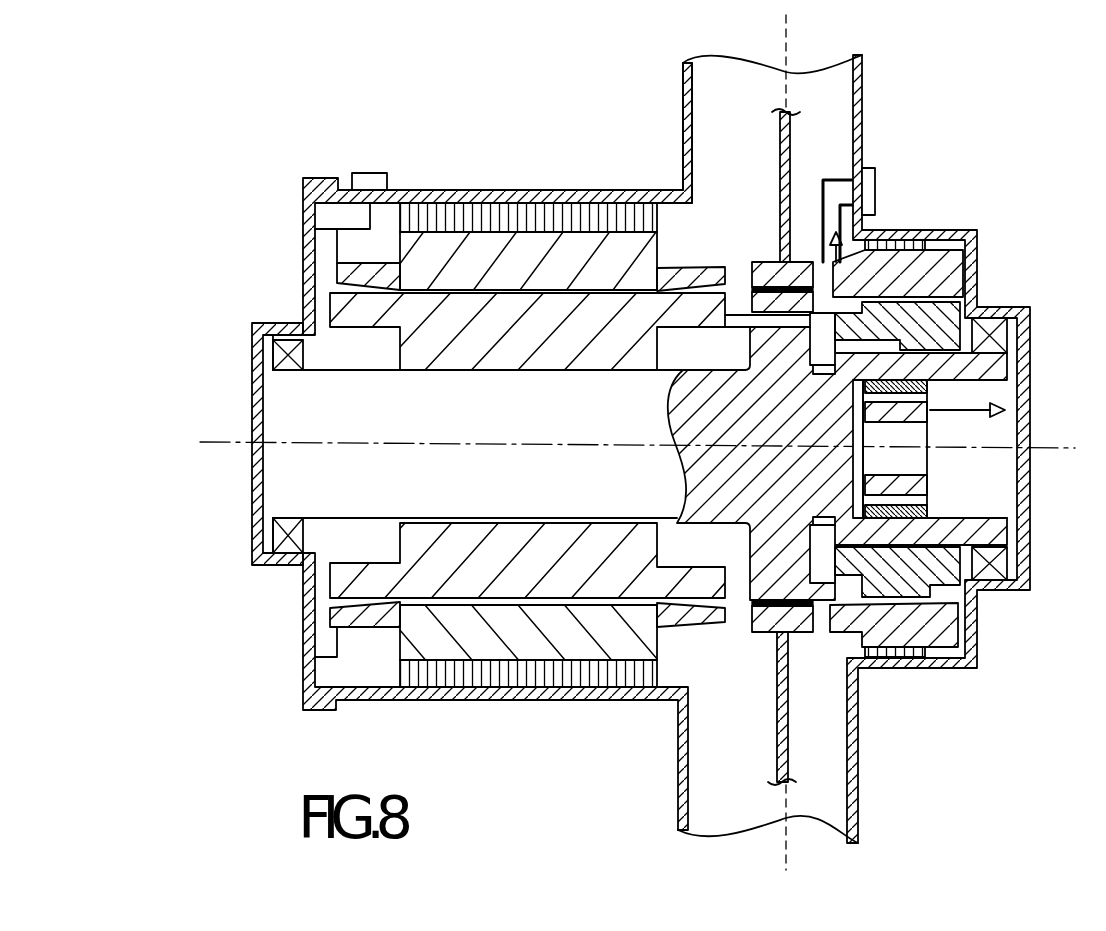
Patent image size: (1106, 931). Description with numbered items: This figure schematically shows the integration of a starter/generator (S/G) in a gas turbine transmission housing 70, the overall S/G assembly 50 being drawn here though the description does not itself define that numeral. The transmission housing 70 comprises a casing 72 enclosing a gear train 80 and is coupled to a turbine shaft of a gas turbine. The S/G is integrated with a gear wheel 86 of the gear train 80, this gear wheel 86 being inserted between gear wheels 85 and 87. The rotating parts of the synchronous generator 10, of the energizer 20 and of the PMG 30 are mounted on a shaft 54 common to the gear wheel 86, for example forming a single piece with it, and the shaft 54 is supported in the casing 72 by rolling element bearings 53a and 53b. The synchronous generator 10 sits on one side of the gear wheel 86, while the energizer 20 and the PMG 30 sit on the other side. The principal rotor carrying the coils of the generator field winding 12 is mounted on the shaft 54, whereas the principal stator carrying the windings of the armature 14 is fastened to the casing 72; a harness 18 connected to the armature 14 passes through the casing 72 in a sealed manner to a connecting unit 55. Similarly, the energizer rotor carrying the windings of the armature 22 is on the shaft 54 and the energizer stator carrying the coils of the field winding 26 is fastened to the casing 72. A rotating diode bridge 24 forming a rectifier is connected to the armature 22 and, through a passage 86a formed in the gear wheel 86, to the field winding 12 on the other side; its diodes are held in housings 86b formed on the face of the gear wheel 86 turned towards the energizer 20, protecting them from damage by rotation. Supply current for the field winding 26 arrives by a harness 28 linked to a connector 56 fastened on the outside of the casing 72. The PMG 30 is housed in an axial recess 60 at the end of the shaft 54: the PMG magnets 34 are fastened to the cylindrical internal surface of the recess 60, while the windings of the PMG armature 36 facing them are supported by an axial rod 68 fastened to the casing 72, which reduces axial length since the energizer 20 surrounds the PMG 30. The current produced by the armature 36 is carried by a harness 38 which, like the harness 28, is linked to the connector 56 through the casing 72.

The synchronous generator 10 is at (510, 240).
The generator field winding 12 is at (450, 565).
The armature 14 is at (540, 650).
The harness 18 is at (337, 230).
The energizer 20 is at (975, 285).
The armature 22 is at (930, 270).
The rotating diode bridge 24 is at (822, 340).
The field winding 26 is at (900, 240).
The harness 28 is at (827, 232).
The PMG 30 is at (945, 508).
The PMG magnets 34 is at (935, 520).
The PMG armature 36 is at (935, 485).
The harness 38 is at (1015, 432).
The motor pump assembly 50 is at (586, 99).
The rolling element bearing 53a is at (262, 362).
The rolling element bearing 53b is at (990, 335).
The shaft 54 is at (1020, 363).
The connecting unit 55 is at (372, 173).
The connector 56 is at (875, 188).
The axial recess 60 is at (940, 400).
The axial rod 68 is at (910, 456).
The transmission housing 70 is at (882, 810).
The casing 72 is at (862, 120).
The gear train 80 is at (780, 36).
The gear wheel 85 is at (790, 745).
The gear wheel 86 is at (746, 382).
The passage 86a is at (778, 292).
The housings 86b is at (826, 374).
The gear wheel 87 is at (790, 128).